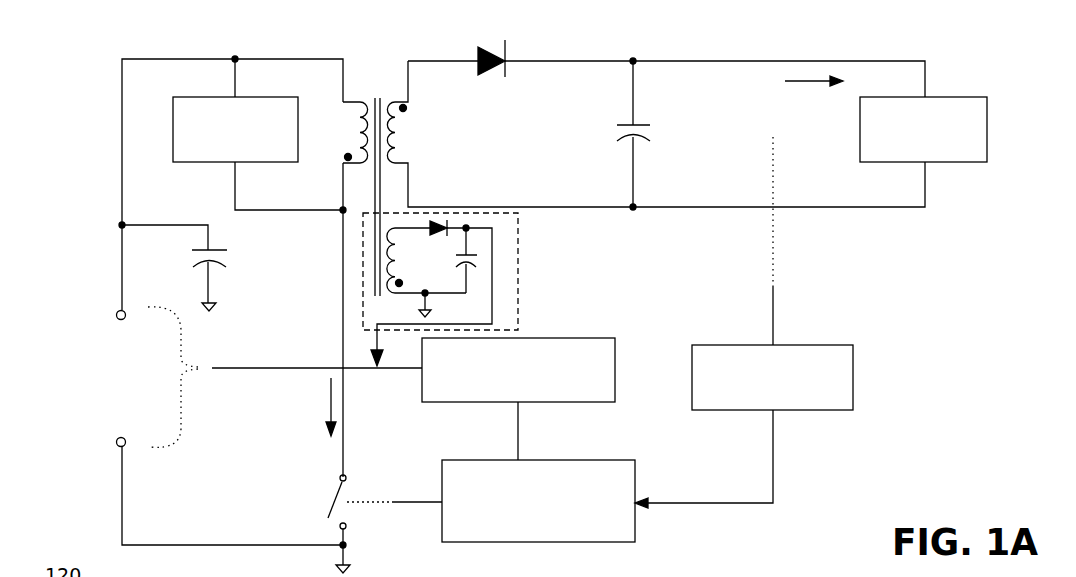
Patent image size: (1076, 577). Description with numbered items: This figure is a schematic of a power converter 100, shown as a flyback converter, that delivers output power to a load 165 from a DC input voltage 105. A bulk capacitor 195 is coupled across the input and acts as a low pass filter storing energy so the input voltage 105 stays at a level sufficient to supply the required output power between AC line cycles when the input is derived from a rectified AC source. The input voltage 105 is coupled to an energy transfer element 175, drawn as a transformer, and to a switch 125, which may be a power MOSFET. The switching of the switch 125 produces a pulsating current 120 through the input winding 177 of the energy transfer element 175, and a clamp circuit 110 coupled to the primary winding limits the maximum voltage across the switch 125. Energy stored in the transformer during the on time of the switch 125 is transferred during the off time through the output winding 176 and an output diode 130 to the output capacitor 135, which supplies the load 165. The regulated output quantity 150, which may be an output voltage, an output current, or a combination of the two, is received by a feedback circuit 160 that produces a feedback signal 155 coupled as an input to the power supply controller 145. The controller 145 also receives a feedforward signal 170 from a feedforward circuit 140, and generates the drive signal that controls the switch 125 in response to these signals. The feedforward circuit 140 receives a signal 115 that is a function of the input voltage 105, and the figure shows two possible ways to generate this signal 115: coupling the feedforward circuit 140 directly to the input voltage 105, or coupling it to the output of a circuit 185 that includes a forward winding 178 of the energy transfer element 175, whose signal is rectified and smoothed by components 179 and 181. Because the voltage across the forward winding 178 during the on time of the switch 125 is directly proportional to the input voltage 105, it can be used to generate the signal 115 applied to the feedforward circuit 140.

The power converter 100 is at (117, 40).
The input voltage 105 is at (93, 395).
The clamp circuit 110 is at (212, 168).
The signal UI 115 is at (277, 360).
The pulsating current ID 120 is at (318, 410).
The switch 125 is at (337, 490).
The output diode 130 is at (498, 70).
The output capacitor 135 is at (622, 115).
The feedforward circuit 140 is at (573, 328).
The power supply controller 145 is at (618, 458).
The output quantity UO 150 is at (763, 313).
The feedback signal 155 is at (778, 487).
The feedback circuit 160 is at (860, 375).
The load 165 is at (943, 87).
The feedforward signal 170 is at (510, 435).
The energy transfer element 175 is at (377, 50).
The output winding 176 is at (410, 127).
The input winding 177 is at (350, 124).
The forward winding 178 is at (380, 260).
The component 179 is at (477, 260).
The component 181 is at (457, 212).
The circuit 185 is at (518, 258).
The bulk capacitor 195 is at (240, 265).